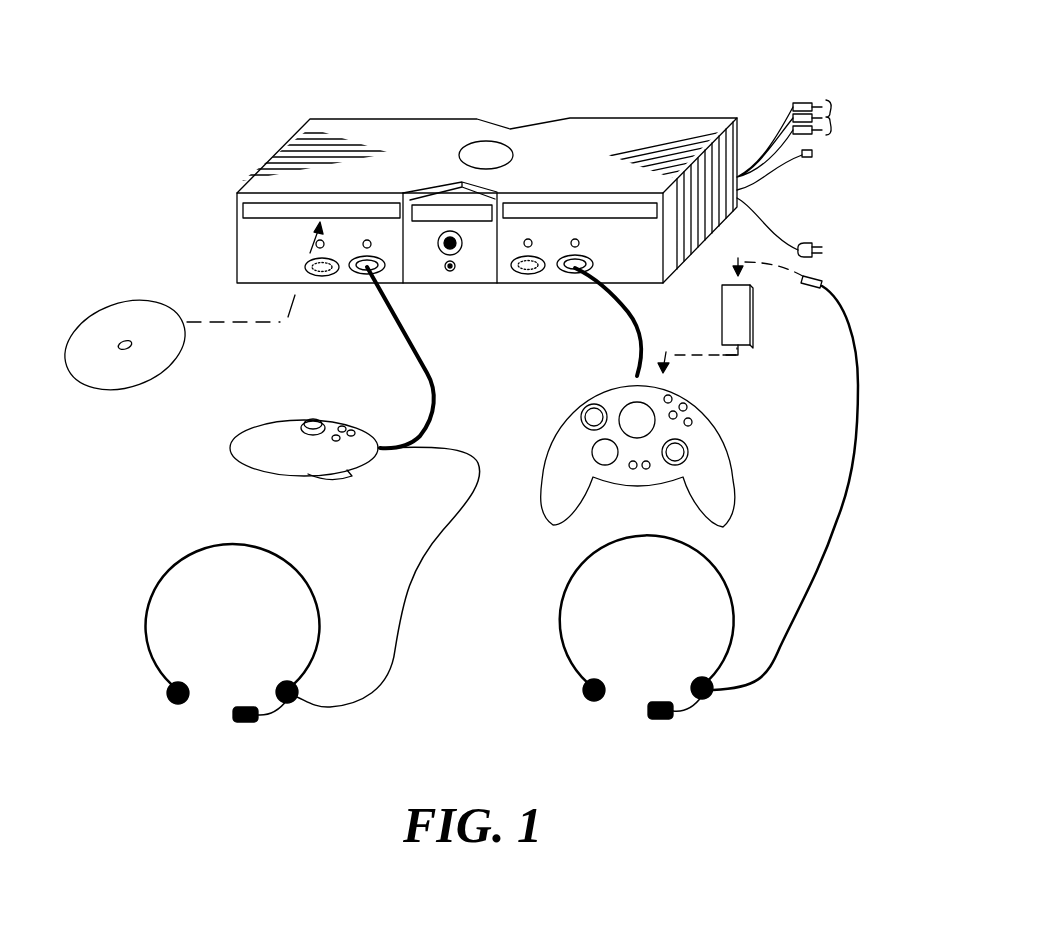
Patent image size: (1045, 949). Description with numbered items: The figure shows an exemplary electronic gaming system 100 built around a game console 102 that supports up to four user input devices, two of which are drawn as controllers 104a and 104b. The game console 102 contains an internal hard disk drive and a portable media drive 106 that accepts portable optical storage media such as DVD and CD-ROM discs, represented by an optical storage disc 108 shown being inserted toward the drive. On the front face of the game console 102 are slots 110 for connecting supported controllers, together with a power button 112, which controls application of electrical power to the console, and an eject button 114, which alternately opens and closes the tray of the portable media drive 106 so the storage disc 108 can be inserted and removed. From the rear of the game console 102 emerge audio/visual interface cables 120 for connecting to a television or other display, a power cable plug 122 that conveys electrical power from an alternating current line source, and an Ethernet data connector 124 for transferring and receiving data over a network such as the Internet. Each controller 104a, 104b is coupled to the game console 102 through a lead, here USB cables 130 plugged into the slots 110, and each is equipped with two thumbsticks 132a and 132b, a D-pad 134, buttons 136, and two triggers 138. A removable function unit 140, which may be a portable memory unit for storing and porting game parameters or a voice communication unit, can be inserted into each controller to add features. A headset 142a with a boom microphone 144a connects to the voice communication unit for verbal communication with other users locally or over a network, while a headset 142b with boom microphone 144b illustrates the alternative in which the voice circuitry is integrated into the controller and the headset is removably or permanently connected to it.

The electronic gaming system 100 is at (630, 37).
The game console 102 is at (347, 119).
The controller 104a is at (555, 522).
The controller 104b is at (305, 478).
The portable media drive 106 is at (252, 212).
The optical storage disc 108 is at (140, 378).
The slots 110 is at (362, 272).
The power button 112 is at (452, 272).
The eject button 114 is at (449, 231).
The audio/visual (A/V) interface cables 120 is at (801, 103).
The power cable plug 122 is at (807, 242).
The Ethernet data connector 124 is at (782, 178).
The USB cables 130 is at (428, 366).
The thumbstick 132a is at (582, 415).
The thumbstick 132b is at (311, 417).
The D-pad 134 is at (593, 451).
The buttons 136 is at (688, 407).
The triggers 138 is at (357, 480).
The removable function unit 140 is at (752, 340).
The headset 142a is at (562, 645).
The headset 142b is at (147, 650).
The boom microphone 144a is at (660, 720).
The boom microphone 144b is at (245, 722).